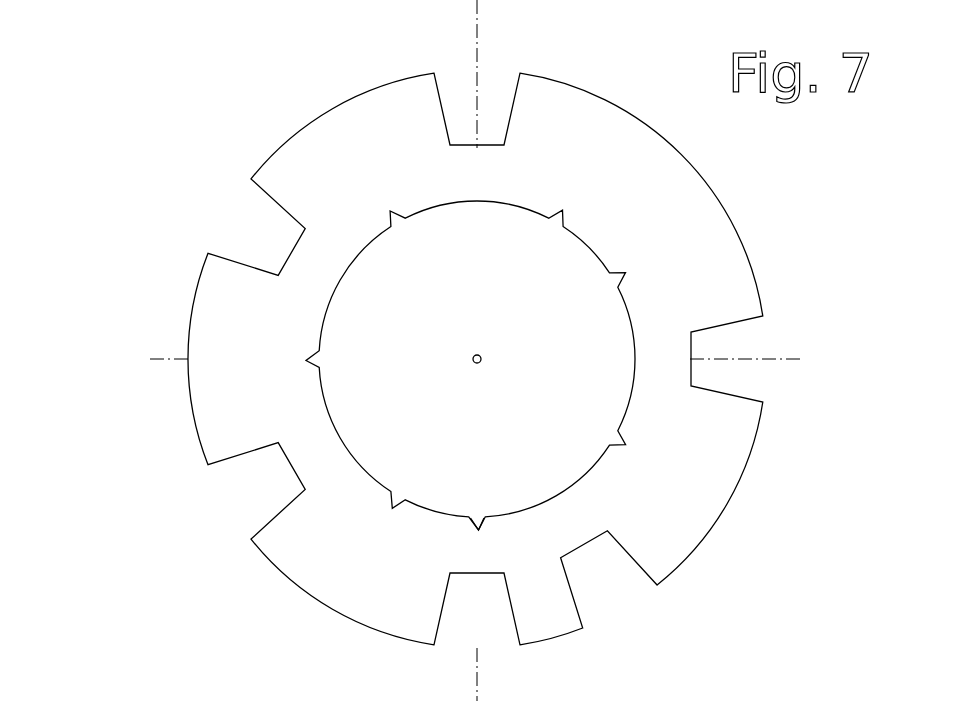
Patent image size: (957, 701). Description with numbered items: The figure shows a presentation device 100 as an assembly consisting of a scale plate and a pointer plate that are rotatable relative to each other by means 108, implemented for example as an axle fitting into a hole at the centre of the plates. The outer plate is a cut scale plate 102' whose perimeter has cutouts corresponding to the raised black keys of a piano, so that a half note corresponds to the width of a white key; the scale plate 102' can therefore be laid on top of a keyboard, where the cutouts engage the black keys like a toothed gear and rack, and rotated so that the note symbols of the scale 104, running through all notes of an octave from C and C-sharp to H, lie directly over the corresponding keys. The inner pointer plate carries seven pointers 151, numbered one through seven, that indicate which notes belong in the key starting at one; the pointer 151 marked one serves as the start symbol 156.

The presentation device 100 is at (108, 103).
The cut scale plate 102' is at (475, 350).
The scale 104 is at (471, 559).
The means enabling rotation 108 is at (481, 352).
The pointer 151 is at (481, 528).
The start symbol 156 is at (477, 480).